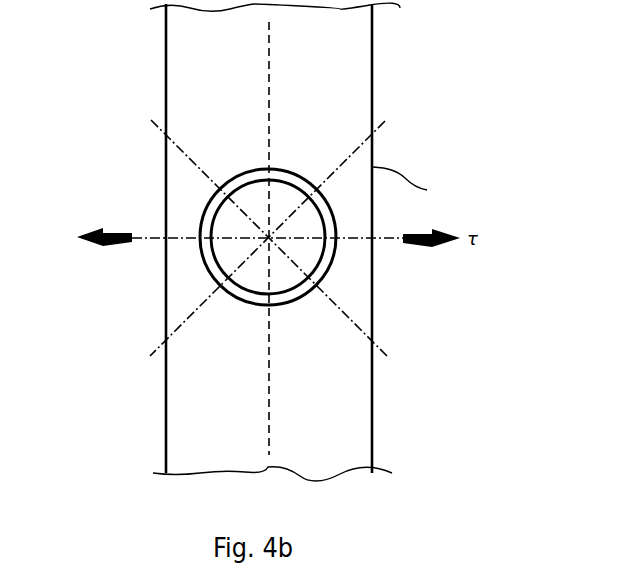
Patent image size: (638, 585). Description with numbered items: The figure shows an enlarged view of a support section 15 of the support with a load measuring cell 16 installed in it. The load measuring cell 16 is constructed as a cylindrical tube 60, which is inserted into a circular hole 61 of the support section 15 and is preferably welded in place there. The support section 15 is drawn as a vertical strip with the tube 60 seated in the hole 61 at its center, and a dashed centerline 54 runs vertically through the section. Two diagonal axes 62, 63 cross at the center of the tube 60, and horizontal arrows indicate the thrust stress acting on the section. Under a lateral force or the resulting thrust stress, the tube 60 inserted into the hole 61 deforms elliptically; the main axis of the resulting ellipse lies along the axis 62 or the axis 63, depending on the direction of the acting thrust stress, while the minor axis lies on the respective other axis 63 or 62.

The support section 15 is at (167, 78).
The load measuring cell 16 is at (236, 322).
The longitudinal axis 54 is at (270, 40).
The cylindrical tube 60 is at (249, 186).
The circular hole 61 is at (205, 213).
The axis 62 is at (360, 327).
The axis 63 is at (183, 322).